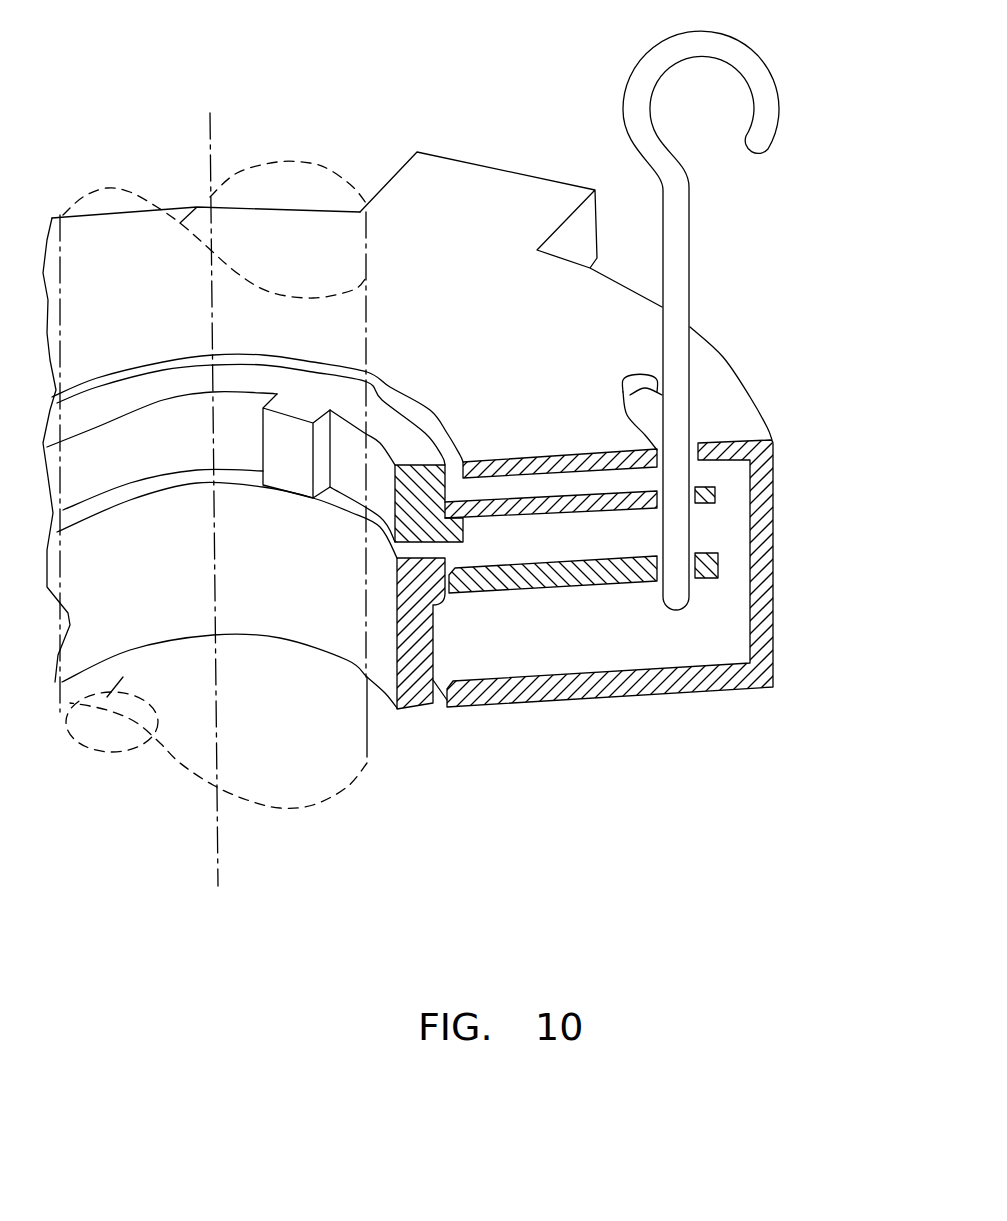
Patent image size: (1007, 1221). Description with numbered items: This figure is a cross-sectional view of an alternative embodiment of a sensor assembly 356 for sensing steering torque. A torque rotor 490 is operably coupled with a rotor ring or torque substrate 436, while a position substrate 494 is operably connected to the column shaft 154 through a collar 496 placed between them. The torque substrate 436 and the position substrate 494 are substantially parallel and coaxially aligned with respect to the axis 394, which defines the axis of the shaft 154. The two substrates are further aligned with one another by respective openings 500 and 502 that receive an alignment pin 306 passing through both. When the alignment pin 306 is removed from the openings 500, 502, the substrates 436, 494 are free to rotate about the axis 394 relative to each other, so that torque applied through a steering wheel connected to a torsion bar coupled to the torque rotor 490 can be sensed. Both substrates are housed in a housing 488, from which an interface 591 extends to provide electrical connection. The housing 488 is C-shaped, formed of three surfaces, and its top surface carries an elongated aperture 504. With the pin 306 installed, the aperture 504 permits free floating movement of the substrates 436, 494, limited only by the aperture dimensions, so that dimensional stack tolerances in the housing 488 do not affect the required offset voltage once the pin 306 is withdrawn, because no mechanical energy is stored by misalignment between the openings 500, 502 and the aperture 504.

The column shaft 154 is at (68, 757).
The alignment pin 306 is at (680, 223).
The sensor assembly 356 is at (403, 727).
The axis 394 is at (217, 827).
The torque substrate 436 is at (517, 500).
The housing 488 is at (768, 627).
The torque rotor 490 is at (395, 425).
The position substrate 494 is at (543, 585).
The collar 496 is at (420, 695).
The opening 500 is at (695, 488).
The opening 502 is at (695, 563).
The elongated aperture 504 is at (697, 440).
The interface 591 is at (518, 190).